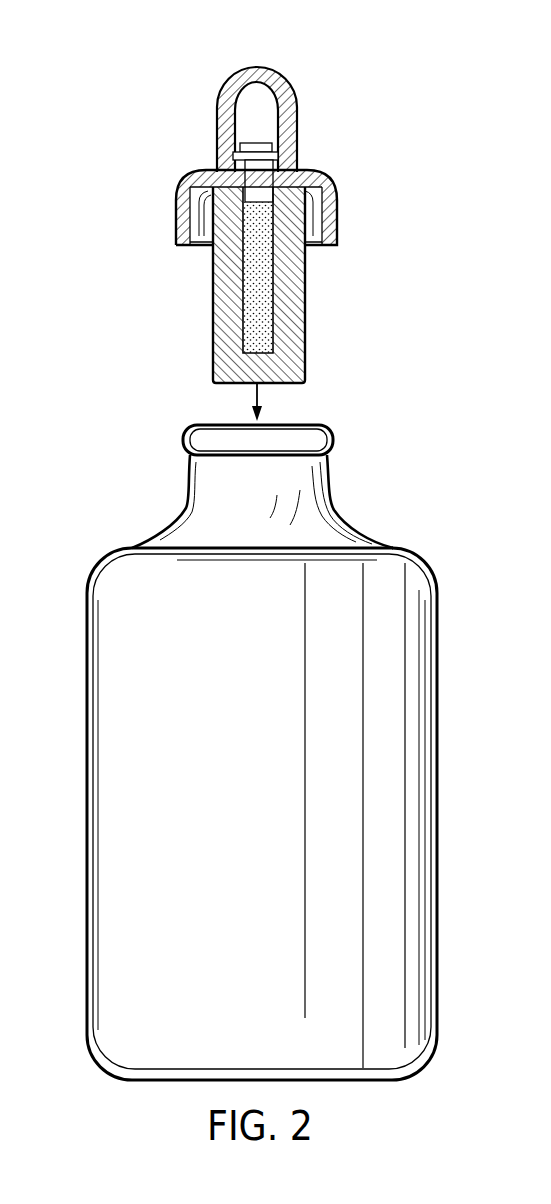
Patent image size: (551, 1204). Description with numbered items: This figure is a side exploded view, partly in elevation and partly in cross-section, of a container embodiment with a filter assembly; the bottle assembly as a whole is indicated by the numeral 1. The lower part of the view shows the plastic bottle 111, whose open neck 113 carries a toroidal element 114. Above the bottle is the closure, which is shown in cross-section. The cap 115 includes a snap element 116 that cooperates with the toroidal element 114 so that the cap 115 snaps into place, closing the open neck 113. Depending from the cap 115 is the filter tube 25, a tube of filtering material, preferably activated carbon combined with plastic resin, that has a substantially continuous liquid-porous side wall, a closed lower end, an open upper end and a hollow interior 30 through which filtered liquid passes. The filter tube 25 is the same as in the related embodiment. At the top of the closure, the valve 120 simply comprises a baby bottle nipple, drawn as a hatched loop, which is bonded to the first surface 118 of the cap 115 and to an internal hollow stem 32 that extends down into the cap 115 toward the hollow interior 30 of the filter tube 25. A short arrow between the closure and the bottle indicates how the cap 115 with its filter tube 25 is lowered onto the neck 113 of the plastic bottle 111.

The container 1 is at (220, 749).
The tube of filtering material 25 is at (225, 285).
The hollow interior 30 is at (258, 283).
The internal hollow stem 32 is at (258, 183).
The plastic bottle 111 is at (86, 850).
The neck 113 is at (177, 515).
The toroidal element 114 is at (184, 441).
The cap 115 is at (187, 185).
The snap element 116 is at (178, 222).
The first surface 118 is at (194, 170).
The valve 120 is at (184, 60).